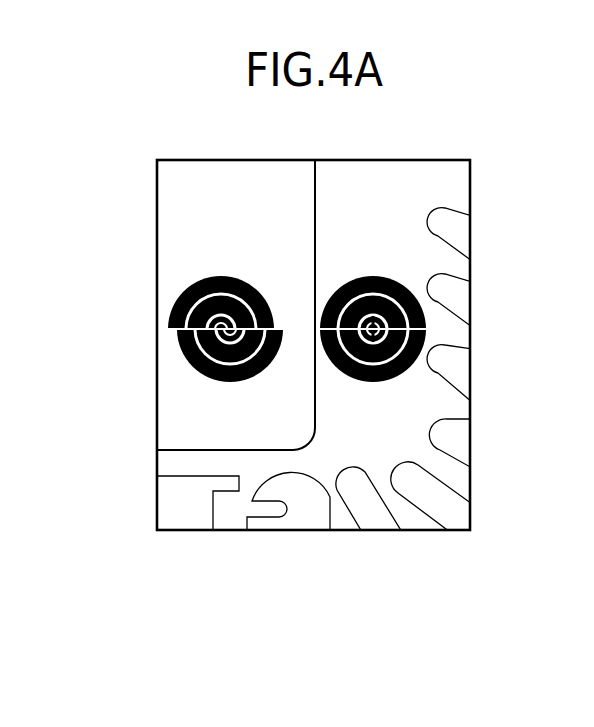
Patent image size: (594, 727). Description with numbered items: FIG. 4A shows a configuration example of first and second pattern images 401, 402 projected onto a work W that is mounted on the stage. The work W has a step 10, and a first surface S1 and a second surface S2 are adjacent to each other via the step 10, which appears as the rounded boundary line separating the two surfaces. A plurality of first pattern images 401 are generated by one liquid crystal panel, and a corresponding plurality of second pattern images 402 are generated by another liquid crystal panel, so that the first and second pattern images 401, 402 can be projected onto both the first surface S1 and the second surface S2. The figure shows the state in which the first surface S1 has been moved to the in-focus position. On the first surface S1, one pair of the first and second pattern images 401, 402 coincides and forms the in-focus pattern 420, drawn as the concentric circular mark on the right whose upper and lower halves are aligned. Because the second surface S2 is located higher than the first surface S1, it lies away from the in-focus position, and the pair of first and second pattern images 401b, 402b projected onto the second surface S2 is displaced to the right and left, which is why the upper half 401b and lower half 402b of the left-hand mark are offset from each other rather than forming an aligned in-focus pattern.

The step 10 is at (317, 182).
The second surface S2 is at (202, 172).
The first surface S1 is at (323, 458).
The work W is at (422, 522).
The in-focus pattern 420 is at (448, 289).
The first pattern image 401 is at (388, 283).
The second pattern image 402 is at (388, 372).
The first pattern image 401b is at (190, 291).
The second pattern image 402b is at (190, 355).